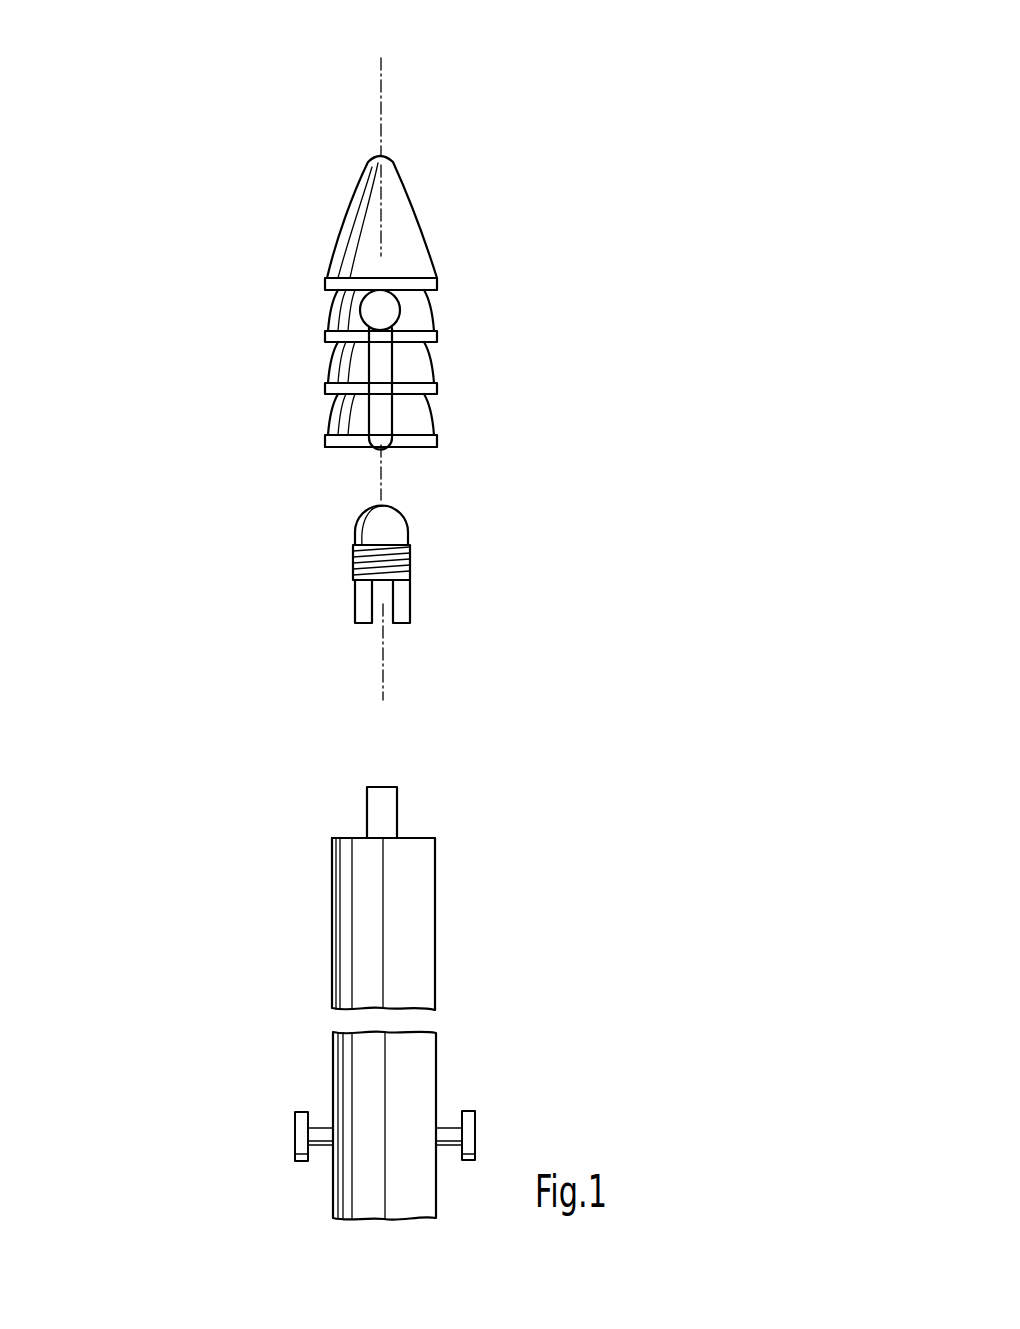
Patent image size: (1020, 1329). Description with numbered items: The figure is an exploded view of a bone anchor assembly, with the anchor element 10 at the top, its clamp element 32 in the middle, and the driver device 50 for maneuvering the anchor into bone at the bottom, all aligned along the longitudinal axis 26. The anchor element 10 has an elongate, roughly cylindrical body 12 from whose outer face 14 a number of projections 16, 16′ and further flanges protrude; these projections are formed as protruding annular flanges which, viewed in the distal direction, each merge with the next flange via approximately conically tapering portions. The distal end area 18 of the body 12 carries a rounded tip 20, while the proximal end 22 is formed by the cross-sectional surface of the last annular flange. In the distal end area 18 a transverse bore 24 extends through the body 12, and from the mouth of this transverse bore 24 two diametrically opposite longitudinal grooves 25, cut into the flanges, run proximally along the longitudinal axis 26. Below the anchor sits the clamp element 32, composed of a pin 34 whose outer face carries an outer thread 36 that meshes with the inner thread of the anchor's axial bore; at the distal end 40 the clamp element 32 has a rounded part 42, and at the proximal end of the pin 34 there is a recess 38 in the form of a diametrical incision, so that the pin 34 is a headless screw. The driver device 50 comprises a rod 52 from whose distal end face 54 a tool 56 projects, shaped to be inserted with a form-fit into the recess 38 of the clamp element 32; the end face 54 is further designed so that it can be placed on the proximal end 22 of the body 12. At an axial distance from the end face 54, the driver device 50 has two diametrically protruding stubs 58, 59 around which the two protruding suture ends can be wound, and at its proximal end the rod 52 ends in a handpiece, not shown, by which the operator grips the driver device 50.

The anchor element 10 is at (527, 105).
The body 12 is at (466, 331).
The outer face 14 is at (420, 420).
The projection 16 is at (325, 285).
The projection 16′ is at (325, 336).
The distal end area 18 is at (435, 273).
The rounded tip 20 is at (393, 203).
The proximal end 22 is at (423, 448).
The transverse bore 24 is at (398, 309).
The longitudinal groove 25 is at (377, 450).
The longitudinal axis 26 is at (380, 73).
The clamp element 32 is at (447, 548).
The pin 34 is at (354, 583).
The outer thread 36 is at (411, 564).
The recess 38 is at (378, 608).
The distal end 40 is at (353, 533).
The rounded part 42 is at (400, 504).
The driver device 50 is at (510, 936).
The rod 52 is at (343, 920).
The end face 54 is at (352, 836).
The tool 56 is at (385, 807).
The stub 58 is at (323, 1127).
The stub 59 is at (444, 1127).